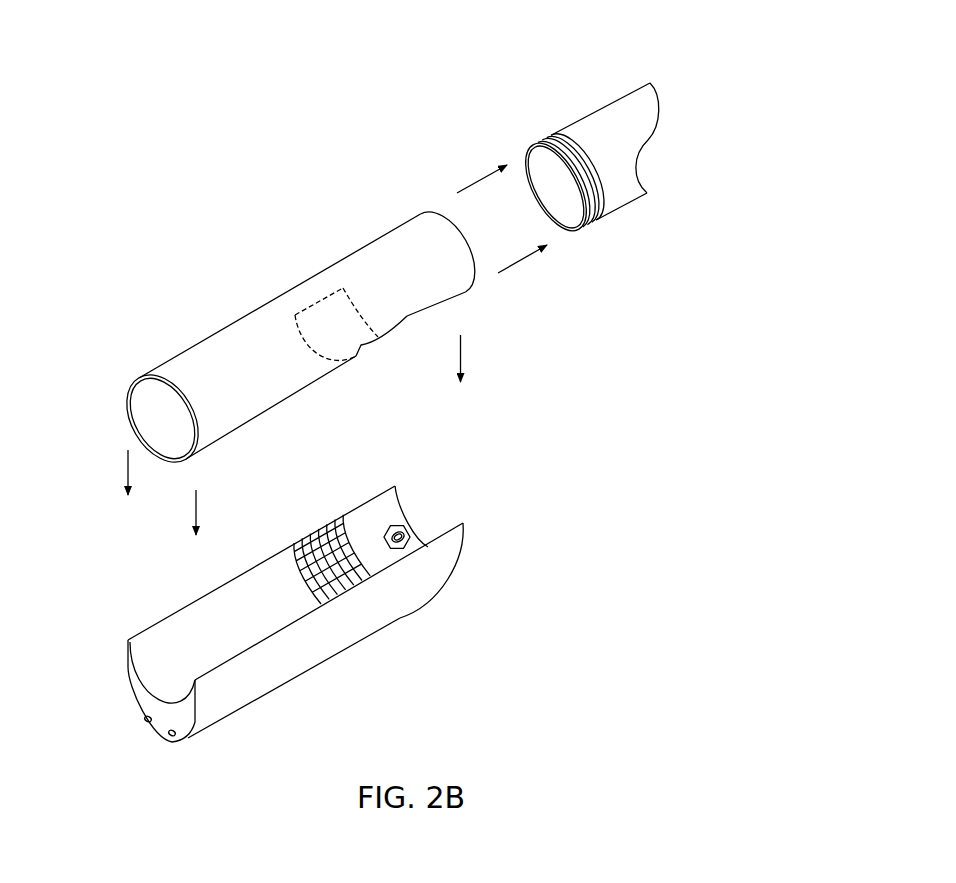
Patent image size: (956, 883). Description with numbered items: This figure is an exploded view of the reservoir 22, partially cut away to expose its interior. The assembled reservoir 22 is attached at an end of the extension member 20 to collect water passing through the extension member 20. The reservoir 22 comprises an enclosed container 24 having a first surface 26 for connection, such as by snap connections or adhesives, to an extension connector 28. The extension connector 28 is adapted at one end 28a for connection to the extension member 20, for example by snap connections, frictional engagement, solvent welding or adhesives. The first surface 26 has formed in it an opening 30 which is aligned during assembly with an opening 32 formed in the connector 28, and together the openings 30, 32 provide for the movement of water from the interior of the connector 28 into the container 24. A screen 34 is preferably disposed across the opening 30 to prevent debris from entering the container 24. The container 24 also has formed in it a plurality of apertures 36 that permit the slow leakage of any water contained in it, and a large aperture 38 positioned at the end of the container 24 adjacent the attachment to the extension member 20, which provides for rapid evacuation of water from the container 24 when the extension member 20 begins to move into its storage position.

The extension member 20 is at (623, 113).
The reservoir 22 is at (341, 331).
The enclosed container 24 is at (305, 607).
The first surface 26 is at (143, 647).
The extension connector 28 is at (195, 360).
The end of extension connector 28a is at (460, 287).
The opening 30 is at (350, 543).
The opening 32 is at (390, 336).
The screen 34 is at (370, 583).
The apertures 36 is at (144, 719).
The large aperture 38 is at (413, 537).